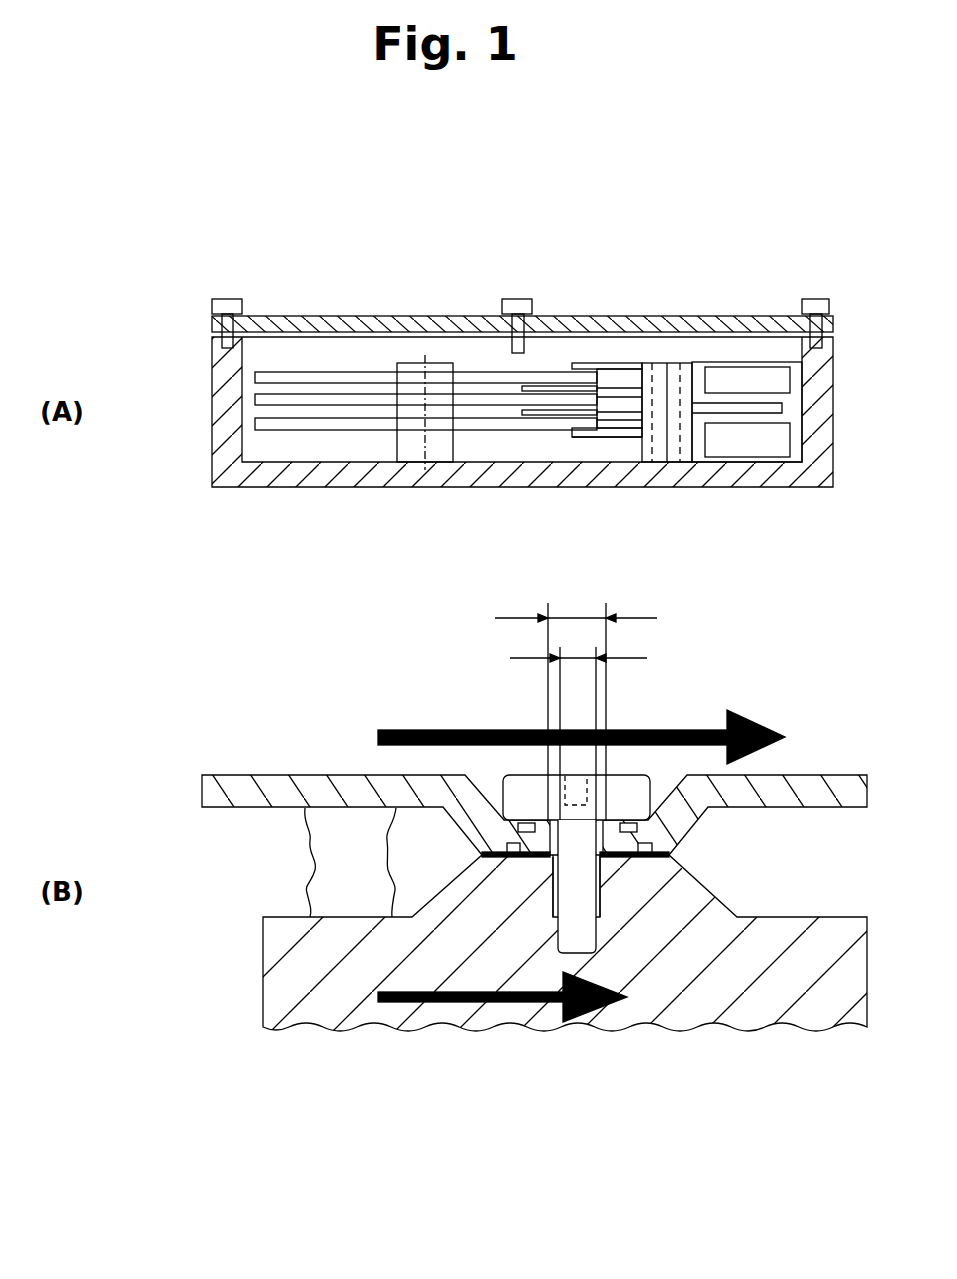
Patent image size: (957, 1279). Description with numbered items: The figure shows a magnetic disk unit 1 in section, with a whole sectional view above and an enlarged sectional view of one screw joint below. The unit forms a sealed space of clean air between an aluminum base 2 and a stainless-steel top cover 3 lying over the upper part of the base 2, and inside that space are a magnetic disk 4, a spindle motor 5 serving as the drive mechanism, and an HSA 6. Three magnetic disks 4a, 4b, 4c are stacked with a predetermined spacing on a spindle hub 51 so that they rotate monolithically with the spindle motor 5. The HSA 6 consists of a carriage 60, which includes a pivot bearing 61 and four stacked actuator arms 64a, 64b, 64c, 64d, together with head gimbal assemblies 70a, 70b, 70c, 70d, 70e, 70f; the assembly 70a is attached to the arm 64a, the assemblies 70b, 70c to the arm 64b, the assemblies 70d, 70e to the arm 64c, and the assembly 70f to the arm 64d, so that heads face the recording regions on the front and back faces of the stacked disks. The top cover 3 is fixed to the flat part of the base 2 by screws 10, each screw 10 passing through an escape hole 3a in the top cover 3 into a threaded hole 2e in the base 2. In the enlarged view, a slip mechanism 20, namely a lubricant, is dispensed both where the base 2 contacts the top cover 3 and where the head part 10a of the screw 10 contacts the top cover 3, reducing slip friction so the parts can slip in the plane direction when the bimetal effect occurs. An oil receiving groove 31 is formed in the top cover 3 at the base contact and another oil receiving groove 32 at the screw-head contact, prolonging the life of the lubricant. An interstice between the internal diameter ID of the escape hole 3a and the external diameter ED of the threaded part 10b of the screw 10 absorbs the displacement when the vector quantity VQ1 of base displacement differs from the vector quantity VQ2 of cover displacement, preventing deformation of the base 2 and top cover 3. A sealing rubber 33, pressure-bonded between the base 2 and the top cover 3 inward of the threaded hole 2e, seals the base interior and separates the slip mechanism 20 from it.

The magnetic disk unit 1 is at (552, 217).
The base 2 is at (835, 419).
The threaded hole 2e is at (598, 917).
The top cover 3 is at (738, 316).
The escape hole 3a is at (565, 802).
The magnetic disk 4 is at (424, 402).
The magnetic disk 4a is at (343, 372).
The magnetic disk 4b is at (273, 394).
The magnetic disk 4c is at (303, 431).
The spindle motor 5 is at (417, 468).
The spindle hub 51 is at (440, 363).
The HSA 6 is at (688, 463).
The carriage 60 is at (661, 362).
The pivot bearing 61 is at (685, 368).
The actuator arm 64a is at (583, 363).
The actuator arm 64b is at (623, 385).
The actuator arm 64c is at (630, 427).
The actuator arm 64d is at (583, 437).
The head gimbal assembly 70a is at (548, 386).
The head gimbal assembly 70b is at (538, 372).
The head gimbal assembly 70c is at (522, 386).
The head gimbal assembly 70d is at (557, 417).
The head gimbal assembly 70e is at (550, 416).
The head gimbal assembly 70f is at (532, 418).
The screw 10 is at (227, 298).
The head part 10a is at (641, 790).
The threaded part 10b is at (578, 931).
The slip mechanism 20 is at (653, 813).
The oil receiving groove 31 is at (641, 846).
The oil receiving groove 32 is at (628, 827).
The sealing rubber 33 is at (312, 866).
The internal diameter ID is at (576, 704).
The external diameter ED is at (578, 722).
The vector quantity of displacement of the base VQ1 is at (462, 1003).
The vector quantity of displacement of the top cover VQ2 is at (492, 730).